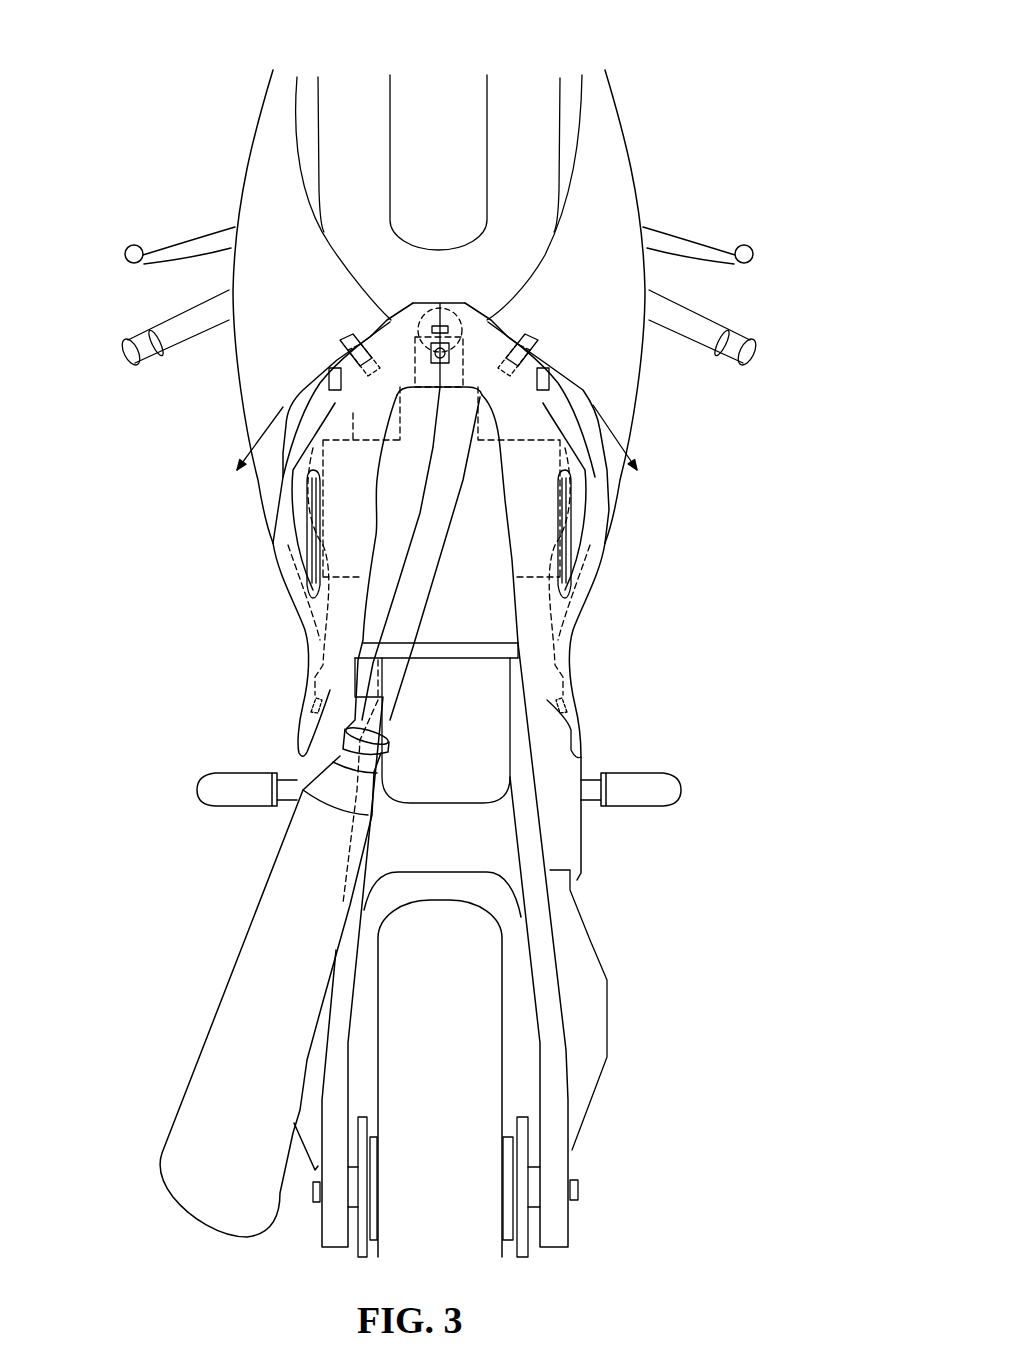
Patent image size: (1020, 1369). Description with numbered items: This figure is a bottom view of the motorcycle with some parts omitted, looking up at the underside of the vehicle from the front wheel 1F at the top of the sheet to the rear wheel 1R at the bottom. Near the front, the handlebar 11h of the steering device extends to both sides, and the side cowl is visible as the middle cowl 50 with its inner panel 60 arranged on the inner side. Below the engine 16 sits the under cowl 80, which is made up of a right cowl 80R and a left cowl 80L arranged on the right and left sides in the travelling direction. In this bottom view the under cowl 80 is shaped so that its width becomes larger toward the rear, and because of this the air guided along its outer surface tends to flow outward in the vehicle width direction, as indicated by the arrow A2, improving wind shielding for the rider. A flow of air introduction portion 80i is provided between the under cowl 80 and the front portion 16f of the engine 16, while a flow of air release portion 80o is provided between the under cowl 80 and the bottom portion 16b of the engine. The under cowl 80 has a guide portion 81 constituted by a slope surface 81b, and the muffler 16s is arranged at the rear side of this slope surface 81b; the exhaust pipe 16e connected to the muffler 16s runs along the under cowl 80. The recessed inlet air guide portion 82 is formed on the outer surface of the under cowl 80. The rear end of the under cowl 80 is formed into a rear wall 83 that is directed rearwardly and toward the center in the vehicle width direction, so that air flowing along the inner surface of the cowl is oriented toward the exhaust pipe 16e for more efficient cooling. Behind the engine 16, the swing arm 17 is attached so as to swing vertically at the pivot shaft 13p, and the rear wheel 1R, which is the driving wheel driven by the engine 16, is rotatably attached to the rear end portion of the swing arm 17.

The front wheel 1F is at (428, 107).
The rear wheel 1R is at (477, 1029).
The middle cowl 50 is at (613, 155).
The inner panel 60 is at (575, 117).
The handlebar 11h is at (737, 338).
The arrow indicating flow of air A2 is at (262, 432).
The under cowl 80 is at (270, 542).
The flow of air introduction portion 80i is at (453, 297).
The flow of air release portion 80o is at (480, 633).
The right cowl 80R is at (275, 560).
The left cowl 80L is at (607, 557).
The guide portion 81 is at (313, 643).
The slope surface 81b is at (439, 592).
The inlet air guide portion 82 is at (313, 578).
The rear wall 83 is at (317, 710).
The engine 16 is at (550, 530).
The bottom portion of the engine 16b is at (493, 620).
The exhaust pipe 16e is at (433, 553).
The front portion of the engine 16f is at (510, 436).
The muffler 16s is at (220, 1062).
The pivot shaft 13p is at (447, 680).
The swing arm 17 is at (545, 948).